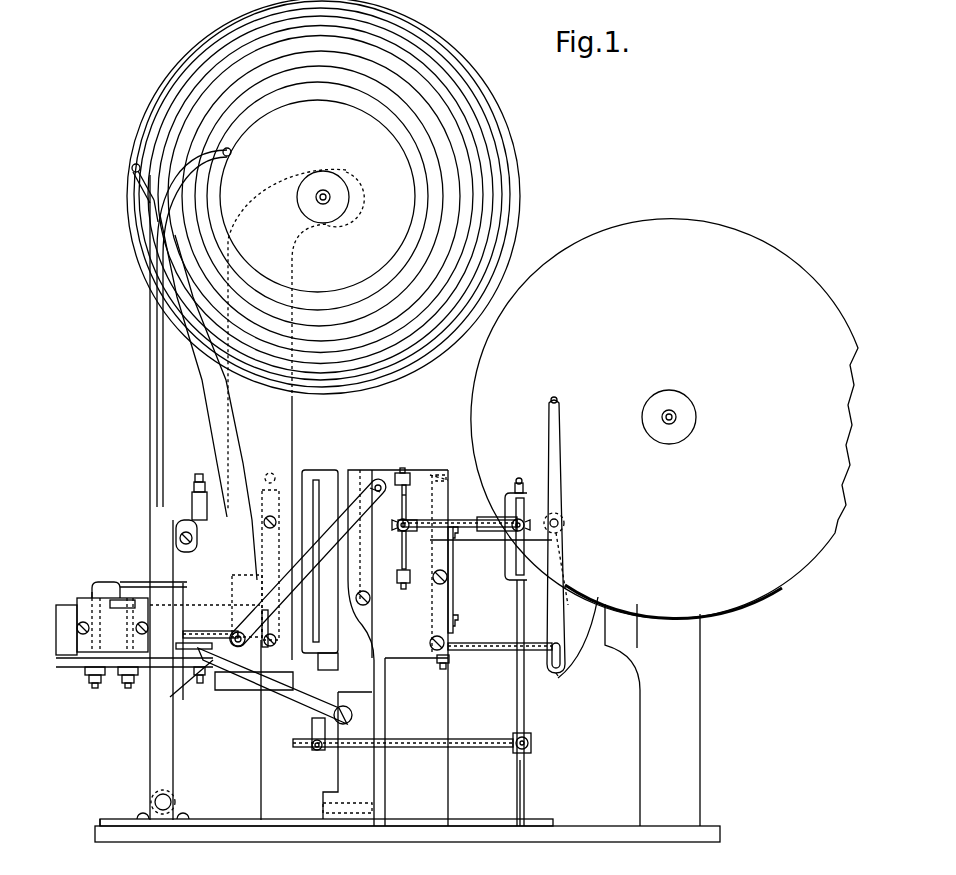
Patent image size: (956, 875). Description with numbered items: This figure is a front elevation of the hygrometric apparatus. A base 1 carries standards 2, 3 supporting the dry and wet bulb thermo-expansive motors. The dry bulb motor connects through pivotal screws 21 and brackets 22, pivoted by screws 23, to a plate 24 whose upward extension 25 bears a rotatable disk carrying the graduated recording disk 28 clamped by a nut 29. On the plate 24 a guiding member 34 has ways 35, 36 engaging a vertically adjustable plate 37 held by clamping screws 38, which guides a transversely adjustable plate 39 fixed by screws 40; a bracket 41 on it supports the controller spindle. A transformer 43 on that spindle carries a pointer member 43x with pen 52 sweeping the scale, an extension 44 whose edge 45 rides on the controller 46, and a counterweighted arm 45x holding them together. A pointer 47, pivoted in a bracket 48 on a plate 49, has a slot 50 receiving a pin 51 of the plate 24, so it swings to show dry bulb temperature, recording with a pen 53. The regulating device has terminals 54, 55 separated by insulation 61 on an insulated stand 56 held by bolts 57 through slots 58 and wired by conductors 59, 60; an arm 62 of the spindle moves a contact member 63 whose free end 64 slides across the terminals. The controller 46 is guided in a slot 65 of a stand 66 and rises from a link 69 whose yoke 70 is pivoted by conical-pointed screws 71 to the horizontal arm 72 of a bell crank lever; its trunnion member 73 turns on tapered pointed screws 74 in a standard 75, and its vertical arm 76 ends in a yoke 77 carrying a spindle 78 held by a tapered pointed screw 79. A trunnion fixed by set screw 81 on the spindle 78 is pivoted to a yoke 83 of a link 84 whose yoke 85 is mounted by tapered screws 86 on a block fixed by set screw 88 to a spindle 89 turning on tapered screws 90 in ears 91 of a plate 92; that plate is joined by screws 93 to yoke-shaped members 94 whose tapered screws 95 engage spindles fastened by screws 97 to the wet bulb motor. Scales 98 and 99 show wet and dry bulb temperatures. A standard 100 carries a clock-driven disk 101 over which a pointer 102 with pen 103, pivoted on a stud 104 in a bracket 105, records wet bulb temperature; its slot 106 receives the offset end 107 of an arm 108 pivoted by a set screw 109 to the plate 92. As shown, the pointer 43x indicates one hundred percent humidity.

The base 1 is at (712, 822).
The standard 2 is at (261, 790).
The standard 3 is at (448, 708).
The pivotal screws 21 is at (200, 482).
The brackets 22 is at (183, 495).
The screws 23 is at (255, 530).
The plate 24 is at (305, 465).
The upward extension 25 is at (297, 415).
The graduated recording disk 28 is at (508, 165).
The nut 29 is at (342, 185).
The guiding member 34 is at (55, 660).
The way 35 is at (268, 625).
The way 36 is at (173, 625).
The vertically adjustable plate 37 is at (205, 678).
The clamping screws 38 is at (236, 632).
The transversely adjustable plate 39 is at (176, 665).
The screws 40 is at (183, 640).
The bracket 41 is at (170, 697).
The transformer 43 is at (245, 490).
The pointer member 43x is at (153, 205).
The extension 44 is at (376, 487).
The edge 45 is at (370, 497).
The counterweighted arm 45x is at (352, 712).
The controller 46 is at (320, 555).
The pointer 47 is at (146, 398).
The bracket 48 is at (138, 800).
The plate 49 is at (112, 818).
The slot 50 is at (180, 540).
The pin 51 is at (176, 528).
The pen attachment 52 is at (132, 167).
The pen attachment 53 is at (232, 152).
The electrical terminal 54 is at (125, 600).
The electrical terminal 55 is at (85, 598).
The insulated stand 56 is at (80, 605).
The bolts 57 is at (76, 630).
The slots 58 is at (56, 615).
The conductor 59 is at (135, 685).
The conductor 60 is at (85, 668).
The insulation 61 is at (110, 568).
The arm 62 is at (240, 577).
The contact member 63 is at (140, 582).
The free end 64 is at (92, 582).
The slot 65 is at (350, 590).
The stand 66 is at (375, 715).
The link 69 is at (338, 662).
The yoke 70 is at (312, 726).
The conical-pointed screws 71 is at (316, 750).
The horizontal arm 72 is at (425, 748).
The trunnion member 73 is at (531, 740).
The tapered pointed screws 74 is at (530, 747).
The standard 75 is at (526, 790).
The arm 76 is at (526, 710).
The yoke 77 is at (505, 553).
The spindle 78 is at (552, 540).
The tapered pointed screw 79 is at (519, 478).
The set screw 81 is at (528, 518).
The yoke 83 is at (490, 517).
The link 84 is at (466, 520).
The yoke 85 is at (410, 510).
The tapered screws 86 is at (408, 531).
The set screw 88 is at (395, 530).
The spindle 89 is at (406, 490).
The tapered screws 90 is at (404, 468).
The ears 91 is at (402, 480).
The plate 92 is at (440, 605).
The screws 93 is at (447, 576).
The yoke-shaped members 94 is at (448, 480).
The tapered screws 95 is at (447, 497).
The screws 97 is at (458, 535).
The scale 98 is at (320, 478).
The scale 99 is at (272, 690).
The standard 100 is at (700, 706).
The rotatable disk 101 is at (772, 568).
The pointer 102 is at (562, 450).
The pen 103 is at (557, 397).
The stud 104 is at (560, 522).
The bracket 105 is at (566, 647).
The slot 106 is at (560, 672).
The offset end 107 is at (580, 600).
The arm 108 is at (508, 651).
The set screw 109 is at (444, 642).